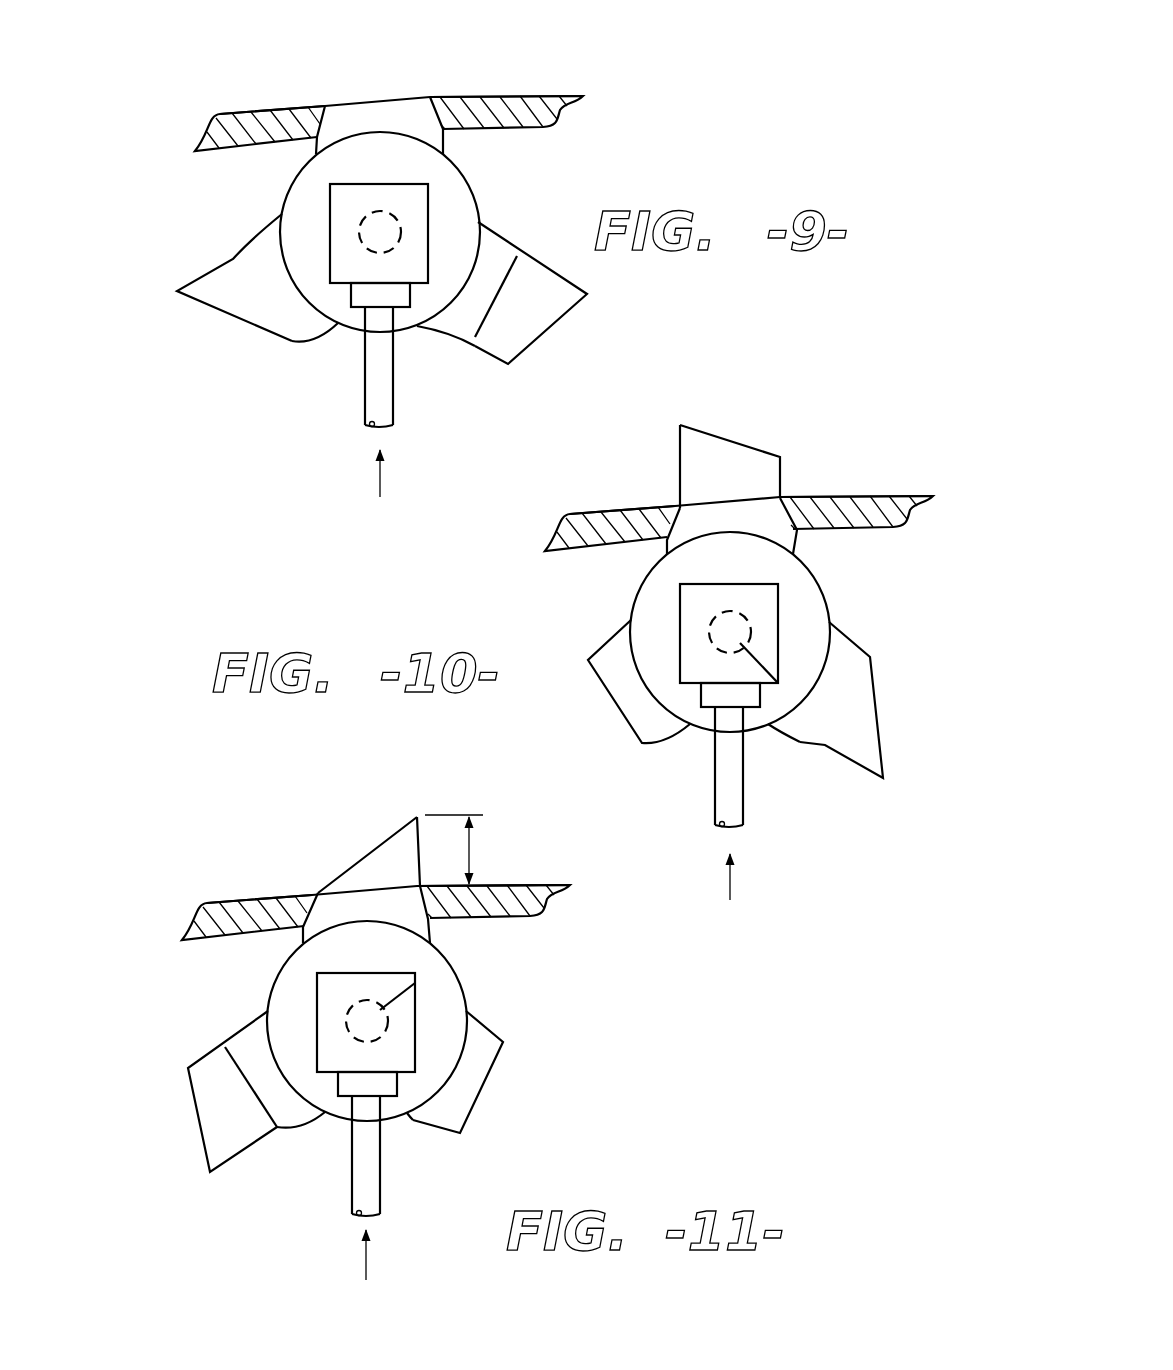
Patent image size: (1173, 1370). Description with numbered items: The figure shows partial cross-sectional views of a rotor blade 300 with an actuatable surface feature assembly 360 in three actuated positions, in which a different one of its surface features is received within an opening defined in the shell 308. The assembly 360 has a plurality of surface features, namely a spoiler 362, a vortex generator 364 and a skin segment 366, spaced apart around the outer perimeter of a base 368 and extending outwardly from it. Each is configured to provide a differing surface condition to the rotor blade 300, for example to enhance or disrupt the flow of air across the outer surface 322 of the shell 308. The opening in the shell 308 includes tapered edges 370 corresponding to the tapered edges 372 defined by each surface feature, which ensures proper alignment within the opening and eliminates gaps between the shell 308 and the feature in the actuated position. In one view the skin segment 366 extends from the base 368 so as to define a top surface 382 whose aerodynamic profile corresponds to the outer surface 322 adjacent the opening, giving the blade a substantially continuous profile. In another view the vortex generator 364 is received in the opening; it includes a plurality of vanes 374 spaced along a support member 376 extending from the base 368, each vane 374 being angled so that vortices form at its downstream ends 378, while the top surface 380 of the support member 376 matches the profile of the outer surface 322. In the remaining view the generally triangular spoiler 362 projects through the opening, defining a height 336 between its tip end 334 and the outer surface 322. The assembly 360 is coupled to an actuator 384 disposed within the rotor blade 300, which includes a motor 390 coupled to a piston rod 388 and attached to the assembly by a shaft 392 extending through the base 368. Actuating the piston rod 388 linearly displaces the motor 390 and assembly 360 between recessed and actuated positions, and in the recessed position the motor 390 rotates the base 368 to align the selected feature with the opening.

In FIG. 9, the rotor blade 300 is at (383, 272).
In FIG. 10, the rotor blade 300 is at (750, 611).
In FIG. 11, the rotor blade 300 is at (376, 1030).
In FIG. 9, the shell 308 is at (422, 103).
In FIG. 10, the shell 308 is at (752, 504).
In FIG. 11, the shell 308 is at (396, 886).
In FIG. 9, the outer surface 322 is at (463, 89).
In FIG. 10, the outer surface 322 is at (810, 489).
In FIG. 11, the outer surface 322 is at (366, 914).
In FIG. 11, the tip end 334 is at (448, 798).
In FIG. 11, the height 336 is at (486, 843).
In FIG. 9, the actuatable surface feature assembly 360 is at (353, 259).
In FIG. 10, the actuatable surface feature assembly 360 is at (766, 622).
In FIG. 11, the actuatable surface feature assembly 360 is at (421, 1013).
In FIG. 9, the spoiler 362 is at (222, 292).
In FIG. 10, the spoiler 362 is at (875, 711).
In FIG. 11, the spoiler 362 is at (349, 841).
In FIG. 9, the vortex generator 364 is at (563, 293).
In FIG. 10, the vortex generator 364 is at (728, 439).
In FIG. 11, the vortex generator 364 is at (210, 1104).
In FIG. 9, the skin segment 366 is at (401, 79).
In FIG. 10, the skin segment 366 is at (749, 633).
In FIG. 11, the skin segment 366 is at (388, 1011).
In FIG. 9, the base 368 is at (418, 232).
In FIG. 10, the base 368 is at (689, 632).
In FIG. 11, the base 368 is at (324, 1021).
In FIG. 9, the tapered edges 370 is at (275, 92).
In FIG. 10, the tapered edges 370 is at (606, 502).
In FIG. 11, the tapered edges 370 is at (279, 884).
In FIG. 9, the tapered edges 372 is at (377, 366).
In FIG. 10, the tapered edges 372 is at (689, 715).
In FIG. 11, the tapered edges 372 is at (416, 1110).
In FIG. 10, the vanes 374 is at (650, 450).
In FIG. 10, the support member 376 is at (825, 544).
In FIG. 10, the downstream ends 378 is at (746, 426).
In FIG. 10, the top surface 380 is at (816, 463).
In FIG. 9, the top surface 382 is at (393, 62).
In FIG. 9, the actuator 384 is at (346, 384).
In FIG. 10, the actuator 384 is at (696, 784).
In FIG. 11, the actuator 384 is at (398, 1178).
In FIG. 9, the piston rod 388 is at (410, 435).
In FIG. 10, the piston rod 388 is at (762, 836).
In FIG. 11, the piston rod 388 is at (409, 1180).
In FIG. 9, the motor 390 is at (326, 233).
In FIG. 10, the motor 390 is at (803, 645).
In FIG. 11, the motor 390 is at (424, 1015).
In FIG. 9, the shaft 392 is at (462, 221).
In FIG. 10, the shaft 392 is at (831, 652).
In FIG. 11, the shaft 392 is at (449, 1005).